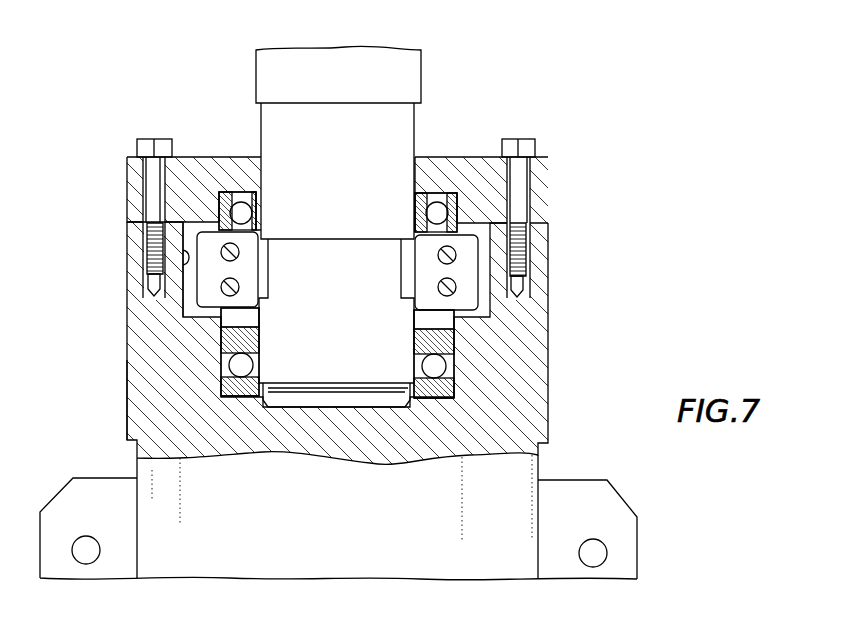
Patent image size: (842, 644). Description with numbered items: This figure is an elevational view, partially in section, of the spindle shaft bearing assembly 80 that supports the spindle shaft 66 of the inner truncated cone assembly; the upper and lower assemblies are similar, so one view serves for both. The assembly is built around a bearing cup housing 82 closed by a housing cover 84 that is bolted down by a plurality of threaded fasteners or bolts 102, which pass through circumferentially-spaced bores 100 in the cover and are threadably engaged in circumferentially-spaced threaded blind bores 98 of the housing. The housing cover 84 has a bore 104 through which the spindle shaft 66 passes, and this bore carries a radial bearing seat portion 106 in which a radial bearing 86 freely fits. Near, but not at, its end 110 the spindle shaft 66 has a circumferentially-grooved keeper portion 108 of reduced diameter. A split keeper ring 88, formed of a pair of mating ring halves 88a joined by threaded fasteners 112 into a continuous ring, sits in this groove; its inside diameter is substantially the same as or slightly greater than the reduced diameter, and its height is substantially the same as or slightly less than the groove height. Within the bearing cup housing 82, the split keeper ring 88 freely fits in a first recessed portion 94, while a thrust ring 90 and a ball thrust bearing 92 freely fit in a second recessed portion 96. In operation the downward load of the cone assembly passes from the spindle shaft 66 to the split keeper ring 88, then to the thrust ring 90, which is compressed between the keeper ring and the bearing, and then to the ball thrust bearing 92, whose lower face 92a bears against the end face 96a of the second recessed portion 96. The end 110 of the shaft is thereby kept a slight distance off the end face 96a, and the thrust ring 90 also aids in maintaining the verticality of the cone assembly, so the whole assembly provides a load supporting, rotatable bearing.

The spindle shaft 66 is at (421, 60).
The spindle shaft bearing assembly 80 is at (127, 335).
The bearing cup housing 82 is at (127, 383).
The housing cover 84 is at (127, 172).
The radial bearing 86 is at (222, 192).
The split keeper ring 88 is at (258, 270).
The mating ring halves 88a is at (468, 246).
The thrust ring 90 is at (250, 320).
The ball thrust bearing 92 is at (255, 347).
The lower face 92a is at (243, 397).
The first recessed portion 94 is at (187, 257).
The second recessed portion 96 is at (456, 362).
The end face 96a is at (440, 397).
The threaded blind bores 98 is at (147, 283).
The bores 100 is at (146, 203).
The threaded fasteners or bolts 102 is at (153, 139).
The bore 104 is at (415, 172).
The radial bearing seat portion 106 is at (458, 205).
The circumferentially-grooved keeper portion 108 is at (355, 245).
The end 110 is at (353, 388).
The threaded fasteners 112 is at (455, 283).